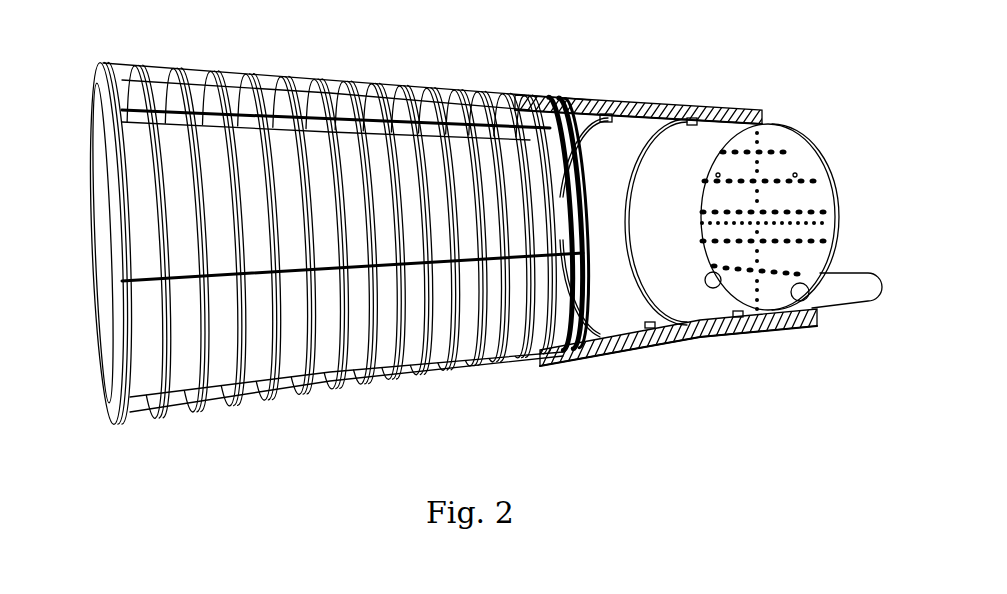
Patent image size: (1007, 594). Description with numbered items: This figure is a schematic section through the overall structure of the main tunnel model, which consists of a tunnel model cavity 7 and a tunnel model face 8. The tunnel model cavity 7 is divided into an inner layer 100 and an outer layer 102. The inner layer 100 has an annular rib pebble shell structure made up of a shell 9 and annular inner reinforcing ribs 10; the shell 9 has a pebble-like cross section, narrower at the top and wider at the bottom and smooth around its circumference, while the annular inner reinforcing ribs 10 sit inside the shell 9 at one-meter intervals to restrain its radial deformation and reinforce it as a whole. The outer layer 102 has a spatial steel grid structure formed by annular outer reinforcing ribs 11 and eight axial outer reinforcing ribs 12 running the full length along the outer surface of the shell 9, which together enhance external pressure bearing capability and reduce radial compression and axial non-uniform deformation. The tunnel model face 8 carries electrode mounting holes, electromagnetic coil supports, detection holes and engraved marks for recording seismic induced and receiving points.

The tunnel model cavity 7 is at (497, 92).
The tunnel model face 8 is at (784, 160).
The shell 9 is at (623, 137).
The annular inner reinforcing ribs 10 is at (640, 197).
The annular outer reinforcing ribs 11 is at (203, 330).
The axial outer reinforcing ribs 12 is at (170, 278).
The inner layer 100 is at (688, 152).
The outer layer 102 is at (175, 432).